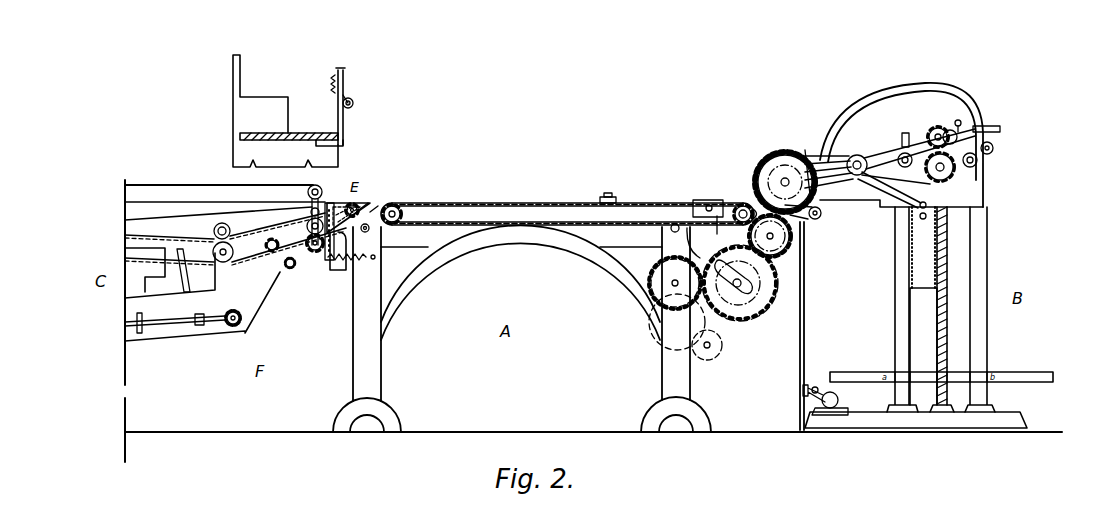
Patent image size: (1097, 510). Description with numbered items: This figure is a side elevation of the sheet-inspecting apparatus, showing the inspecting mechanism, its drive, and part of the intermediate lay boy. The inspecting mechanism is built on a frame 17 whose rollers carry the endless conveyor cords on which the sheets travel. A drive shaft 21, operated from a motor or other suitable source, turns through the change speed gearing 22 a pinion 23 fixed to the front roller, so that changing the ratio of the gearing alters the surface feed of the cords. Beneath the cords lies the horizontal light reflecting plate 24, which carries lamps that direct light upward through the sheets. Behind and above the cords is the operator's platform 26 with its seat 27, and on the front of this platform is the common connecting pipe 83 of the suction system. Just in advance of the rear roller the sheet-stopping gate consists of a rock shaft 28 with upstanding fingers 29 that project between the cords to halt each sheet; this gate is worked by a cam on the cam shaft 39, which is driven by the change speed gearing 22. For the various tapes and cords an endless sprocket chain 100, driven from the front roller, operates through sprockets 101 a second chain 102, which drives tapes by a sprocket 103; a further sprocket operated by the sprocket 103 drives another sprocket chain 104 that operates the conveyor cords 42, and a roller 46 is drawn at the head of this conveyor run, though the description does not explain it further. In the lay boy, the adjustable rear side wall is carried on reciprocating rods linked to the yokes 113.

The frame 17 is at (383, 360).
The drive shaft 21 is at (709, 350).
The change speed gearing 22 is at (770, 313).
The pinion 23 is at (741, 202).
The light reflecting plate 24 is at (520, 244).
The platform 26 is at (266, 129).
The seat 27 is at (268, 97).
The rock shaft 28 is at (372, 211).
The upstanding fingers 29 is at (365, 207).
The cam shaft 39 is at (786, 180).
The conveyor cords 42 is at (163, 185).
The roller 46 is at (307, 191).
The connecting pipe 83 is at (345, 90).
The endless sprocket chain 100 is at (531, 204).
The sprockets 101 is at (405, 208).
The second chain 102 is at (322, 265).
The sprocket 103 is at (232, 262).
The endless sprocket chain 104 is at (128, 236).
The yokes 113 is at (148, 324).